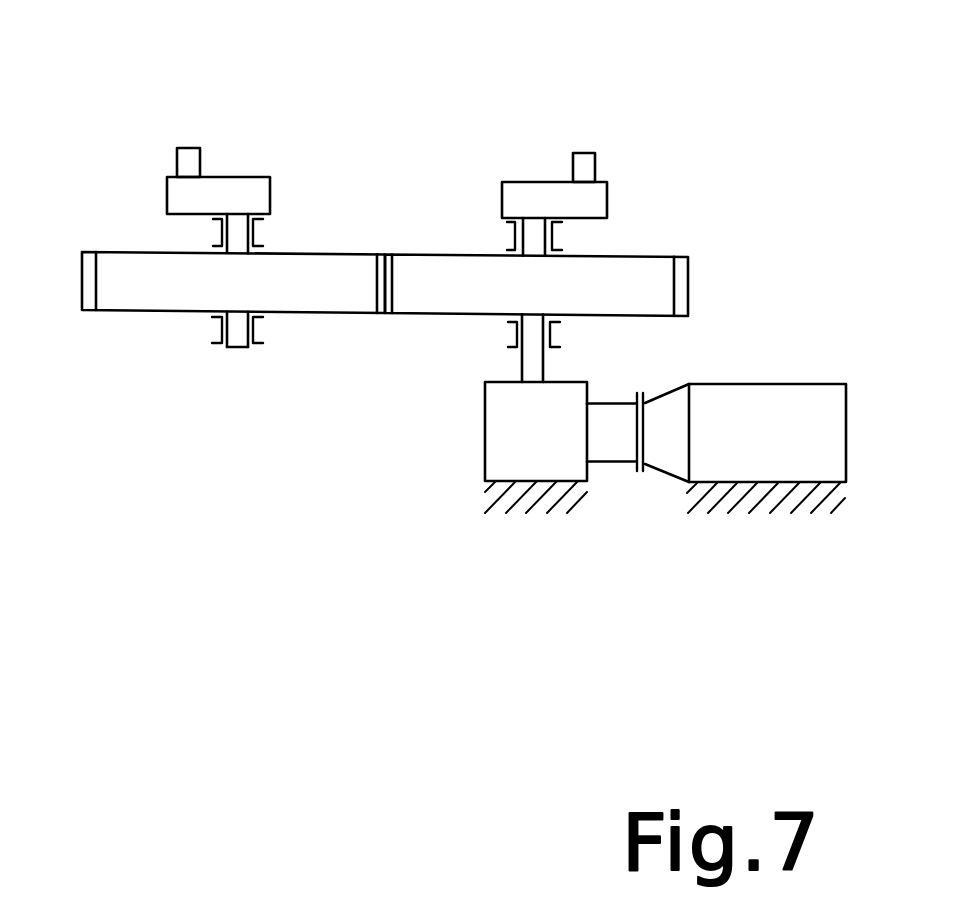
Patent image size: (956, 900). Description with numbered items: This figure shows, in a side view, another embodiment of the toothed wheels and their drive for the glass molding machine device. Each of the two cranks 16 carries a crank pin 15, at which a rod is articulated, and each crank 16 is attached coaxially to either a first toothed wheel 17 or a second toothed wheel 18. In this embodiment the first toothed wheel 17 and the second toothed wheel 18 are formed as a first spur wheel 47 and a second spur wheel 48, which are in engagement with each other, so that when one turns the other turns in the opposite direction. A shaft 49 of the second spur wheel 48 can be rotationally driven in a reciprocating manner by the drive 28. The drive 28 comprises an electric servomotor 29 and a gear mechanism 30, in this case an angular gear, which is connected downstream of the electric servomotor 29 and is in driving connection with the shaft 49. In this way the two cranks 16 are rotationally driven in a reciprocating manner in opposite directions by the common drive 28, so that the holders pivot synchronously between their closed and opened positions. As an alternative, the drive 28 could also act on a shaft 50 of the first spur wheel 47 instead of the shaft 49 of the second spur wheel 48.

The crank pin 15 is at (185, 162).
The crank 16 is at (233, 193).
The first toothed wheel 17 is at (120, 312).
The second toothed wheel 18 is at (672, 256).
The first spur wheel 47 is at (163, 292).
The second spur wheel 48 is at (628, 278).
The shaft 49 is at (533, 353).
The shaft 50 is at (238, 342).
The gear mechanism 30 is at (502, 448).
The drive 28 is at (713, 483).
The electric servomotor 29 is at (773, 487).